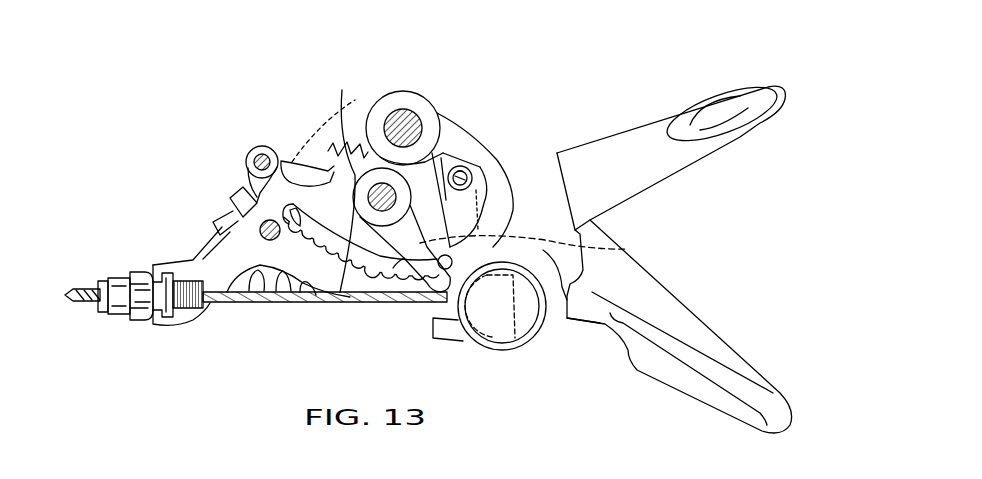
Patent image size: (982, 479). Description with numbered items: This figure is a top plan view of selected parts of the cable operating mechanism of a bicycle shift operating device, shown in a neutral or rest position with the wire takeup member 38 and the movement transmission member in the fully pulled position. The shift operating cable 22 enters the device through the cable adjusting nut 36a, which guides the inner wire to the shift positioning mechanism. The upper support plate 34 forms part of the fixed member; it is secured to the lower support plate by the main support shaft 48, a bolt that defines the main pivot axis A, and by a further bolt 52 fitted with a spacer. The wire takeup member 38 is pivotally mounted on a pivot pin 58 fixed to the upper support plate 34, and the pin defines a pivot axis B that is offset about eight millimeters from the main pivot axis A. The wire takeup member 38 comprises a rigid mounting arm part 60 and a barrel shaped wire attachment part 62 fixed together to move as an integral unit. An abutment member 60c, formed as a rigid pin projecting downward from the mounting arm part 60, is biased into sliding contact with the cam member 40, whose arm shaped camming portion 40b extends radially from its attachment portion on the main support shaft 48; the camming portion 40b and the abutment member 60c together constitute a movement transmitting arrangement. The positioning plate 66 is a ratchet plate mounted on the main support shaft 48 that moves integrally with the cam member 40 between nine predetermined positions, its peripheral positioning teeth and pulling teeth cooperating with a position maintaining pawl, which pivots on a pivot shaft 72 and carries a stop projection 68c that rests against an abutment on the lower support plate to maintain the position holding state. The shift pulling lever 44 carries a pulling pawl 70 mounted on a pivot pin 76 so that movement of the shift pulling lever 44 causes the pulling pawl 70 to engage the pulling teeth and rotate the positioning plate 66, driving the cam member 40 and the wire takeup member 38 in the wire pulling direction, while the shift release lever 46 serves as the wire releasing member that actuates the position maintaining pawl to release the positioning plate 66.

The shift operating cable 22 is at (90, 314).
The upper support plate 34 is at (189, 328).
The cable adjusting nut 36a is at (118, 270).
The wire takeup member 38 is at (583, 402).
The cam member 40 is at (357, 235).
The camming portion 40b is at (393, 268).
The shift pulling lever 44 is at (713, 300).
The shift release lever 46 is at (643, 112).
The main support shaft 48 is at (382, 183).
The bolt 52 is at (249, 150).
The pivot pin 58 is at (424, 118).
The mounting arm part 60 is at (565, 318).
The abutment member 60c is at (627, 249).
The wire attachment part 62 is at (492, 350).
The positioning plate 66 is at (337, 144).
The stop projection 68c is at (229, 195).
The pulling pawl 70 is at (450, 166).
The pivot shaft 72 is at (259, 230).
The pivot pin 76 is at (482, 163).
The main pivot axis A is at (341, 161).
The pivot axis B is at (405, 126).